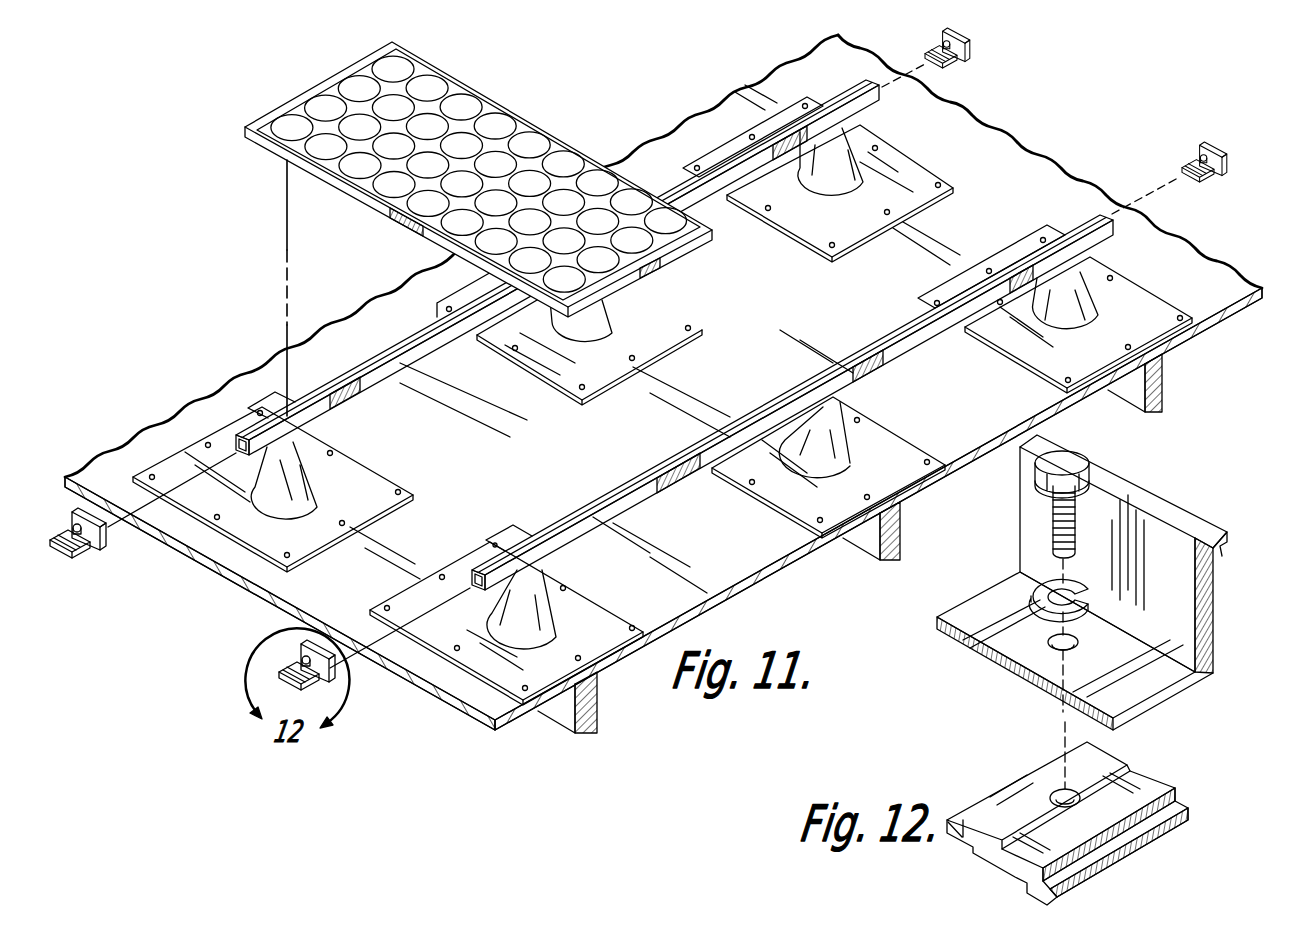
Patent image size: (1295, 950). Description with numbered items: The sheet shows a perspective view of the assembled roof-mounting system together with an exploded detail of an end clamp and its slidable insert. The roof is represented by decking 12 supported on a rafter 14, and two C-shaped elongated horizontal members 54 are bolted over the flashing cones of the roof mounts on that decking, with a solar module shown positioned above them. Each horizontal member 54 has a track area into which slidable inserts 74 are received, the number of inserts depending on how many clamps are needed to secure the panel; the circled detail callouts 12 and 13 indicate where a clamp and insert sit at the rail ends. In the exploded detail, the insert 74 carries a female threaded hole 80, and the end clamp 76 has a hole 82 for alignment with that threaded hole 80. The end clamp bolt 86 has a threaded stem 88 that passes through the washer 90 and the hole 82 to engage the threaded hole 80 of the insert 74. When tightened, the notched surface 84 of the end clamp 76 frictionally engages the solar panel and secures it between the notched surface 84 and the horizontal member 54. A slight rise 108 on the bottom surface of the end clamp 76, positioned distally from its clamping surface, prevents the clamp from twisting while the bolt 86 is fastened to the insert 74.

In FIG. 11, the decking 12 is at (1209, 326).
In FIG. 11, the rail clip assembly (detail) 13 is at (1234, 118).
In FIG. 11, the rafter 14 is at (1164, 393).
In FIG. 11, the C-shaped elongated horizontal member 54 is at (391, 404).
In FIG. 12, the slidable insert 74 is at (1188, 812).
In FIG. 12, the end clamp 76 is at (1212, 648).
In FIG. 12, the female threaded hole 80 is at (1056, 795).
In FIG. 12, the hole 82 is at (1050, 648).
In FIG. 12, the notched surface 84 is at (1225, 542).
In FIG. 12, the end clamp bolt 86 is at (1094, 462).
In FIG. 12, the threaded stem 88 is at (1052, 522).
In FIG. 12, the washer 90 is at (1036, 592).
In FIG. 12, the rise 108 is at (1135, 722).